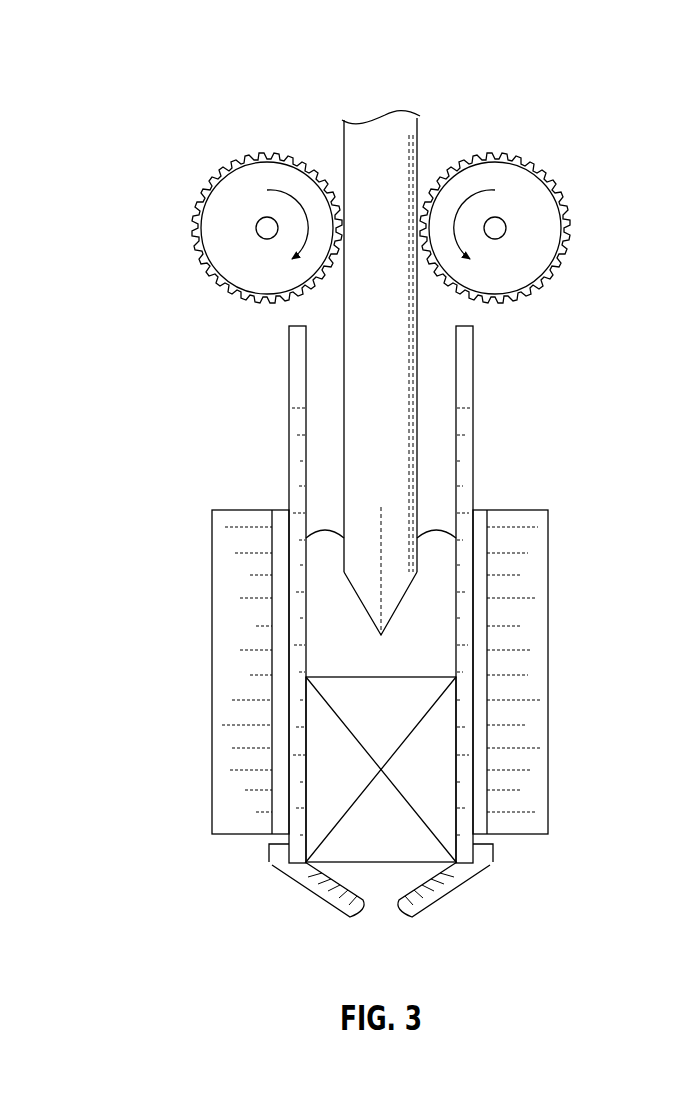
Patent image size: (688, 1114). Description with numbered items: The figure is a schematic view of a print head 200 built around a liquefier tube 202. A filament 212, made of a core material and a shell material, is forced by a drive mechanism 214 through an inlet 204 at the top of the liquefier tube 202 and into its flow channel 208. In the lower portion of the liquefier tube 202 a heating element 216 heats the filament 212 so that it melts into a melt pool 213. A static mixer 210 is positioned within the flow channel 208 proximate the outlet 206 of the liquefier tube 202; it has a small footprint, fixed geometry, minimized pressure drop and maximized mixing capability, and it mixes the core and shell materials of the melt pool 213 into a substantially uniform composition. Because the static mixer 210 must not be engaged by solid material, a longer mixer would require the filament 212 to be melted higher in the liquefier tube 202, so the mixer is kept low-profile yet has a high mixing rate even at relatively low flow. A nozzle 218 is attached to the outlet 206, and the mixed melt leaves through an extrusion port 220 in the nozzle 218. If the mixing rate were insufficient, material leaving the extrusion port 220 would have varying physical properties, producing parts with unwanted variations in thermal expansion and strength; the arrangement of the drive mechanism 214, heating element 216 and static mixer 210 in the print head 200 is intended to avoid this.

The print head 200 is at (118, 60).
The liquefier tube 202 is at (288, 425).
The inlet 204 is at (330, 308).
The outlet 206 is at (295, 853).
The flow channel 208 is at (355, 507).
The static mixer 210 is at (400, 688).
The filament 212 is at (413, 147).
The melt pool 213 is at (330, 590).
The drive mechanism 214 is at (192, 232).
The heating element 216 is at (235, 630).
The nozzle 218 is at (482, 852).
The extrusion port 220 is at (380, 912).